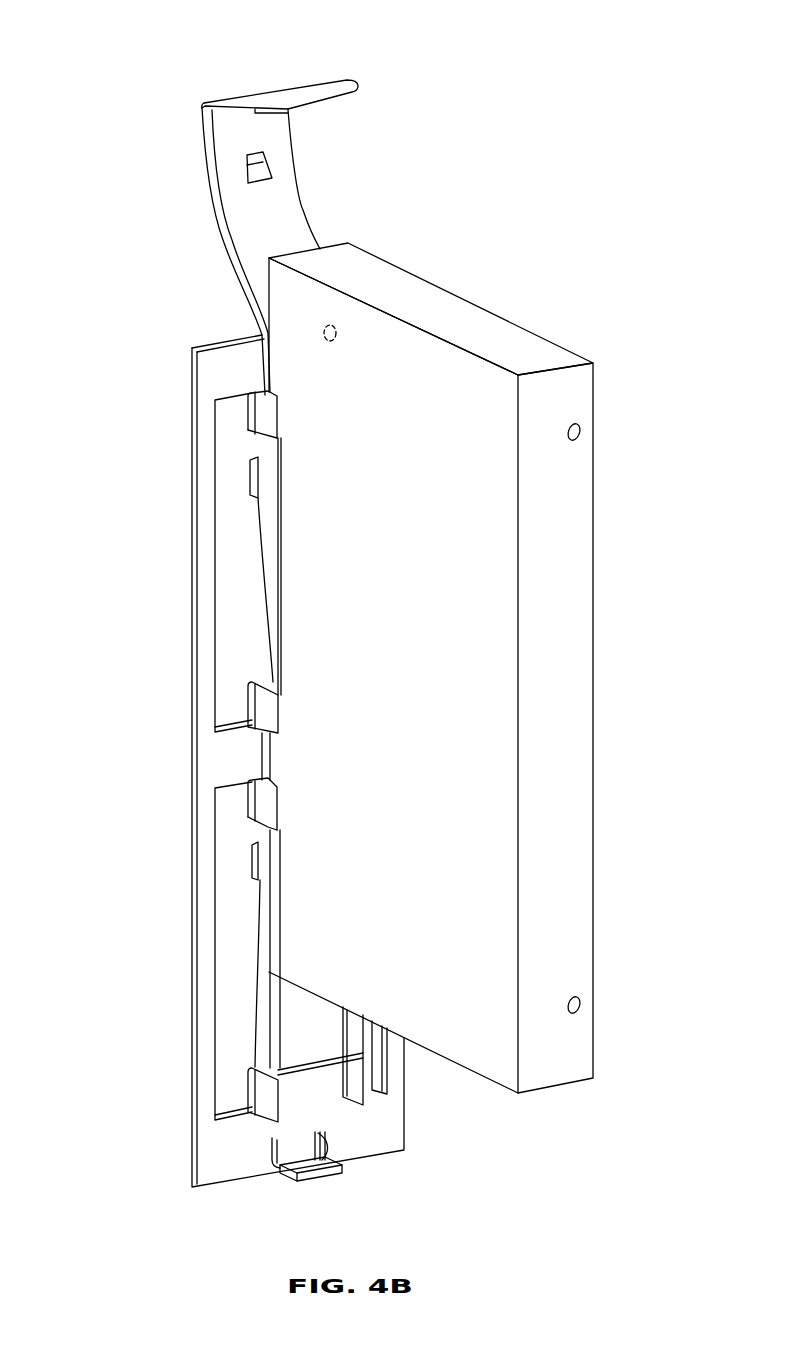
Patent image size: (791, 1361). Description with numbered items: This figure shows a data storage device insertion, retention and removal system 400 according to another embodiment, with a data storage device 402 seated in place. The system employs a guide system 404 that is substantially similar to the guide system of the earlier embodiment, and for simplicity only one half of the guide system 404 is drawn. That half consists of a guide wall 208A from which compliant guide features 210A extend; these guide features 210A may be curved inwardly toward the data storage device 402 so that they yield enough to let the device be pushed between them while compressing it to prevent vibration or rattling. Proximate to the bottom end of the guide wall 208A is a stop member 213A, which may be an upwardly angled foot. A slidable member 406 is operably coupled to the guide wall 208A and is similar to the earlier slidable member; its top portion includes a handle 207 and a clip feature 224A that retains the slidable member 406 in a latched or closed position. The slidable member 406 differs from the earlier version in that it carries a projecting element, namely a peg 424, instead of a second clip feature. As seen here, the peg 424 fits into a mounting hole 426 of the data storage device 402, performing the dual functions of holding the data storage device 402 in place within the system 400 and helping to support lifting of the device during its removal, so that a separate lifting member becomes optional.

The data storage device insertion, retention and removal system 400 is at (505, 117).
The data storage device 402 is at (407, 611).
The guide system 404 is at (178, 657).
The slidable member 406 is at (203, 283).
The handle 207 is at (278, 90).
The clip feature 224A is at (257, 180).
The guide wall 208A is at (200, 372).
The guide feature 210A is at (265, 545).
The stop member 213A is at (320, 1132).
The projecting element (peg) 424 is at (328, 325).
The mounting hole 426 is at (340, 335).